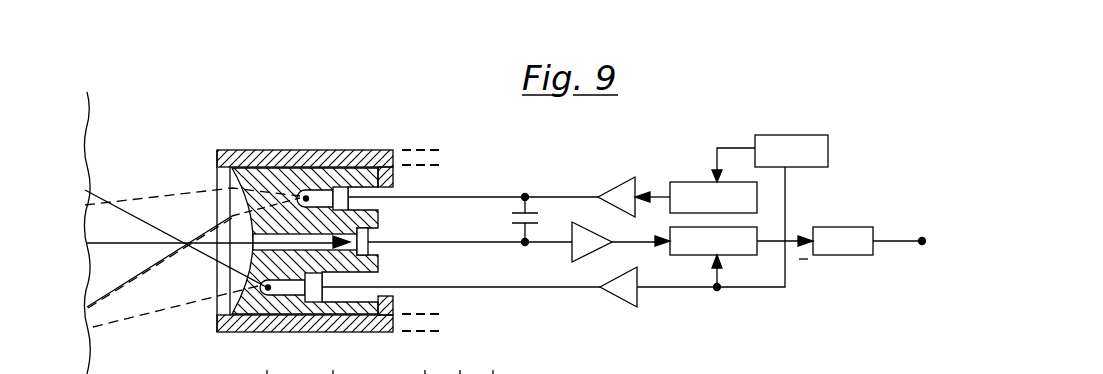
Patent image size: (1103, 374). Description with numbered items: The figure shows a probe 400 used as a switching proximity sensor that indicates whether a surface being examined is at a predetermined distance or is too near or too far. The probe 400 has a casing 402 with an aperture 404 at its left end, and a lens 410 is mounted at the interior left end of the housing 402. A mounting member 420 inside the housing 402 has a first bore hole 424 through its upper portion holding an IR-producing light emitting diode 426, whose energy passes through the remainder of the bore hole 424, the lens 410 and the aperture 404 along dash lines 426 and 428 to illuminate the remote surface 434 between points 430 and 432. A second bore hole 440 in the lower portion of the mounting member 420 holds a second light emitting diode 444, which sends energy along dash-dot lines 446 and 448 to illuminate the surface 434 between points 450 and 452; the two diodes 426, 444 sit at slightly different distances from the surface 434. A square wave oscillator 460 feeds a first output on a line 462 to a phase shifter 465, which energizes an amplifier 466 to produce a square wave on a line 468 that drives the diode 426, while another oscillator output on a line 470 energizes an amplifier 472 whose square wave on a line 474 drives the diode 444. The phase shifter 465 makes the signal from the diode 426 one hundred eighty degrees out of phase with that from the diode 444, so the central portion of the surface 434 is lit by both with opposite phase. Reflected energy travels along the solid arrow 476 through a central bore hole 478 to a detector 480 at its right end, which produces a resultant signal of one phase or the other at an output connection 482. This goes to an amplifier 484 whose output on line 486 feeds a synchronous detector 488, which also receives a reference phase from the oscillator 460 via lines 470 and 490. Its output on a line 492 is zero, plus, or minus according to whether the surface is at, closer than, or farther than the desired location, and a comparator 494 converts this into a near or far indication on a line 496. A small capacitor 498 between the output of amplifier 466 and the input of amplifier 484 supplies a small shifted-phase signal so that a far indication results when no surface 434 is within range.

The probe 400 is at (343, 115).
The casing 402 is at (240, 150).
The aperture 404 is at (222, 175).
The lens 410 is at (217, 287).
The mounting member 420 is at (365, 150).
The first bore hole 424 is at (388, 188).
The light emitting diode 426 is at (142, 202).
The dash line 428 is at (147, 271).
The point 430 is at (95, 203).
The point 432 is at (95, 308).
The remote surface 434 is at (87, 110).
The second bore hole 440 is at (385, 298).
The light emitting diode 444 is at (372, 286).
The dash-dot line 446 is at (150, 313).
The dash-dot line 448 is at (150, 229).
The point 450 is at (87, 190).
The point 452 is at (92, 322).
The square wave oscillator 460 is at (792, 135).
The line 462 is at (738, 148).
The phase shifter 465 is at (692, 182).
The amplifier 466 is at (613, 178).
The line 468 is at (545, 196).
The line 470 is at (741, 289).
The amplifier 472 is at (608, 296).
The line 474 is at (507, 288).
The solid arrow 476 is at (140, 242).
The central bore hole 478 is at (368, 230).
The detector 480 is at (385, 255).
The output connection 482 is at (483, 243).
The amplifier 484 is at (600, 253).
The line 486 is at (641, 240).
The synchronous detector 488 is at (703, 260).
The line 490 is at (720, 284).
The line 492 is at (790, 244).
The comparator 494 is at (838, 257).
The line 496 is at (893, 238).
The capacitor 498 is at (512, 214).